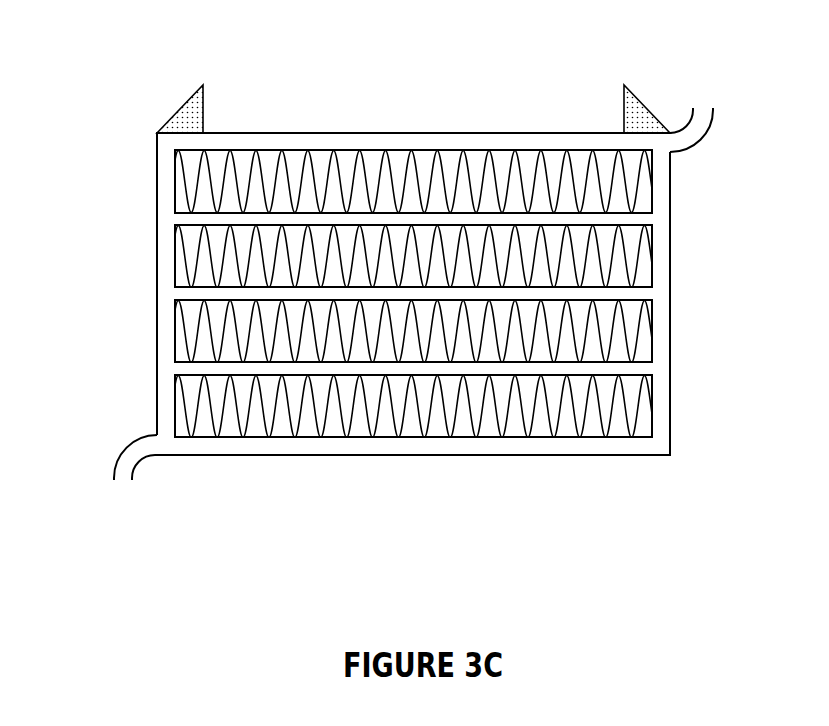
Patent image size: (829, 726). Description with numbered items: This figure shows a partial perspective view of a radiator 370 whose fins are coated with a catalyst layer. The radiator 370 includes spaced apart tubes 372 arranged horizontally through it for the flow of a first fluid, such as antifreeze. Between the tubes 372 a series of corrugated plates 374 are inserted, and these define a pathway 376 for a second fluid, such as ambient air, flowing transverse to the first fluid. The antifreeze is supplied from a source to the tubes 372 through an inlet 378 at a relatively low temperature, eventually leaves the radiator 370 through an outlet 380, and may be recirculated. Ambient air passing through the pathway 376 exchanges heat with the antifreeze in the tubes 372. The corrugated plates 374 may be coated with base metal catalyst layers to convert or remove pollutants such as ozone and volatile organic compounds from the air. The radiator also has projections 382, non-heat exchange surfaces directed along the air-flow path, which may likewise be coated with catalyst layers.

The radiator 370 is at (124, 123).
The tubes 372 is at (640, 294).
The corrugated plates 374 is at (468, 168).
The pathway 376 is at (400, 160).
The inlet 378 is at (697, 145).
The outlet 380 is at (122, 450).
The projections 382 is at (205, 108).